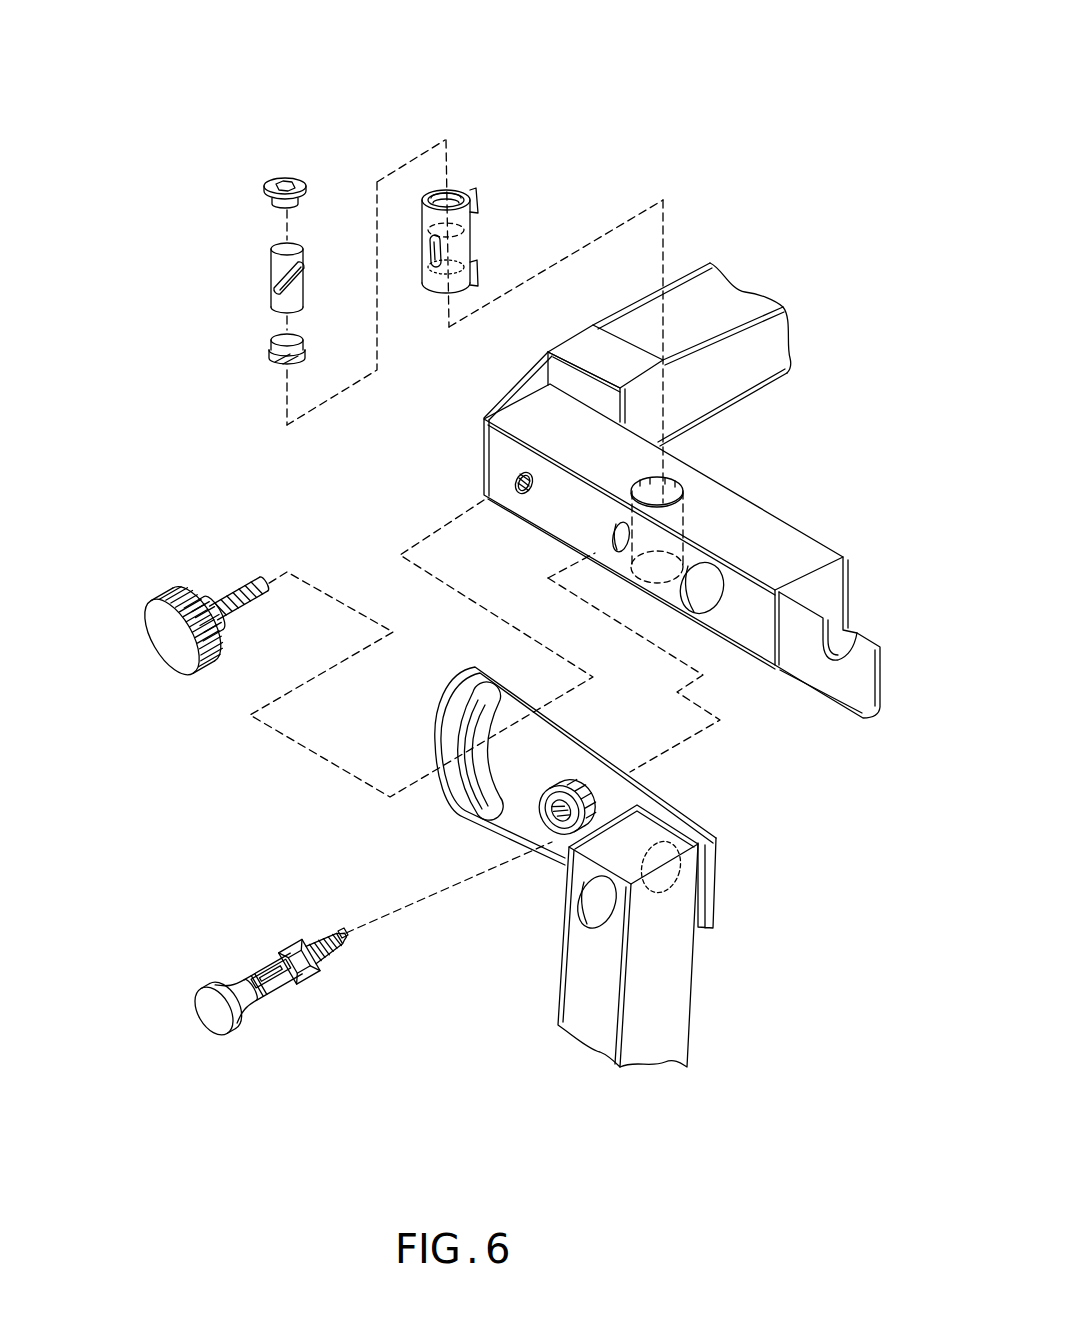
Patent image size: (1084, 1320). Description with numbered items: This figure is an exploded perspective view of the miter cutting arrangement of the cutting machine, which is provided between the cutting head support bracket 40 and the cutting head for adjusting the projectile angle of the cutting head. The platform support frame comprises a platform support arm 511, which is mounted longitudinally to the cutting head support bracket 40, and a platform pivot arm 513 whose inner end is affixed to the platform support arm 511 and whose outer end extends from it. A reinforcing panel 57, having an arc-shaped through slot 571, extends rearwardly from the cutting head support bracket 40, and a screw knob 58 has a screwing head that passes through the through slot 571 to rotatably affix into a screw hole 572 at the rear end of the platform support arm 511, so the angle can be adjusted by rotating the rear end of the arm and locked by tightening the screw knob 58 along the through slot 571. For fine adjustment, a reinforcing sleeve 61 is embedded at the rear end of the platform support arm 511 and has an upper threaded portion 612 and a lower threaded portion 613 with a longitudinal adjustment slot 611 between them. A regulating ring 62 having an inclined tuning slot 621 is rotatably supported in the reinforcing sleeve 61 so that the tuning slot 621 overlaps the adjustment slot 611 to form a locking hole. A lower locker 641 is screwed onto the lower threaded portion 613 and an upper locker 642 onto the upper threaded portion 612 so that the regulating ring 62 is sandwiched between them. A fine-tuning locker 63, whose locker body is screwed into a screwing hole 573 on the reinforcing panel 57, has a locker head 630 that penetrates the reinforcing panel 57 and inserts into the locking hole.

The cutting head support bracket 40 is at (673, 962).
The reinforcing panel 57 is at (550, 747).
The screw knob 58 is at (177, 655).
The reinforcing sleeve 61 is at (608, 58).
The regulating ring 62 is at (282, 247).
The fine-tuning locker 63 is at (274, 1013).
The platform support arm 511 is at (763, 533).
The platform pivot arm 513 is at (725, 382).
The arc-shaped through slot 571 is at (456, 795).
The screw hole 572 is at (514, 484).
The screwing hole 573 is at (548, 822).
The longitudinal adjustment slot 611 is at (423, 243).
The upper threaded portion 612 is at (479, 201).
The lower threaded portion 613 is at (480, 268).
The inclined tuning slot 621 is at (266, 299).
The locker head 630 is at (346, 946).
The lower locker 641 is at (283, 177).
The upper locker 642 is at (273, 343).